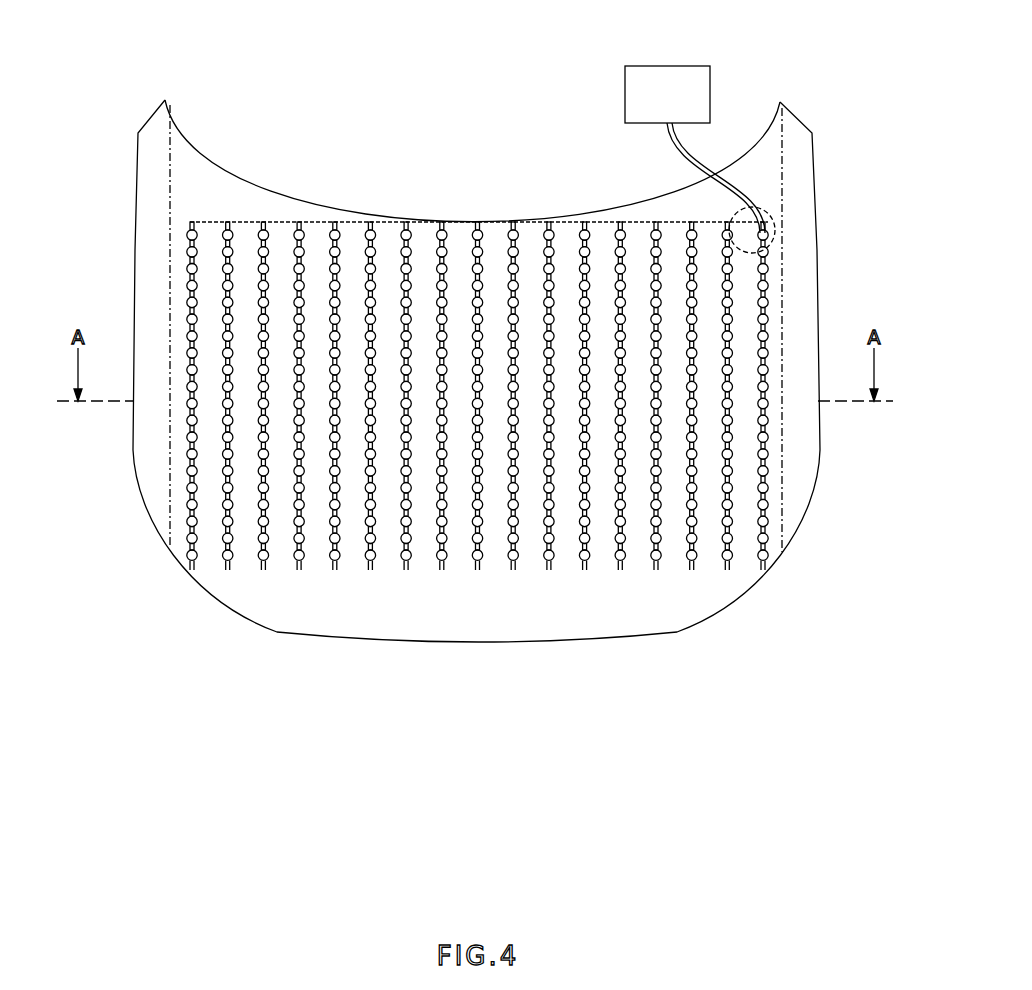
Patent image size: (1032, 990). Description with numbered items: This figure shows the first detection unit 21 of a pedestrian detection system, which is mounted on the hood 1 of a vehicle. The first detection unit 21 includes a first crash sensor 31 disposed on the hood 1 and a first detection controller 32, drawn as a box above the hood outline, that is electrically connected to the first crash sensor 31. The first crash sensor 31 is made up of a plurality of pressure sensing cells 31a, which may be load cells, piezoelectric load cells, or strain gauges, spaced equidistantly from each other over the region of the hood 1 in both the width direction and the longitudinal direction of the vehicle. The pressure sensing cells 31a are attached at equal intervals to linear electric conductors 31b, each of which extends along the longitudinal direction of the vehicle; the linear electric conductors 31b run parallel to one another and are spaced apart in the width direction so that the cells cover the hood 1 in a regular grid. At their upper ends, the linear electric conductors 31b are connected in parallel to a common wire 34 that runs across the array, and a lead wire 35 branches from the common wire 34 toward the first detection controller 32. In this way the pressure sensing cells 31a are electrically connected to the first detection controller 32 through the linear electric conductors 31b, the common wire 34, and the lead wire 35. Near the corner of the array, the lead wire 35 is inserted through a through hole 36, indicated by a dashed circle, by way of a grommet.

The hood 1 is at (105, 311).
The first detection unit 21 is at (824, 213).
The first crash sensor 31 is at (480, 396).
The pressure sensing cells 31a is at (187, 248).
The linear electric conductor 31b is at (187, 252).
The first detection controller 32 is at (667, 66).
The common wire 34 is at (312, 221).
The lead wire 35 is at (763, 200).
The through hole 36 is at (776, 242).